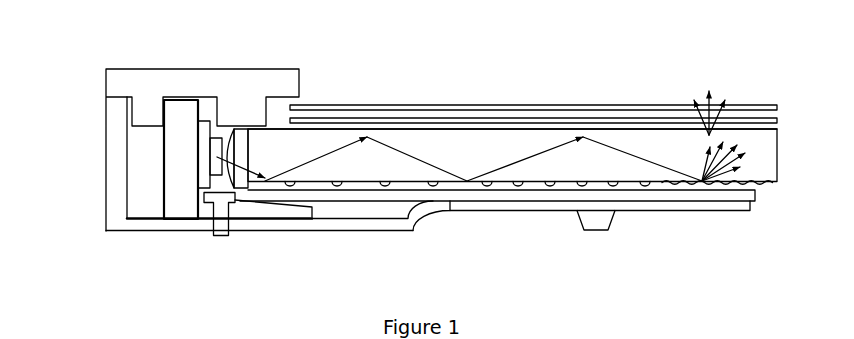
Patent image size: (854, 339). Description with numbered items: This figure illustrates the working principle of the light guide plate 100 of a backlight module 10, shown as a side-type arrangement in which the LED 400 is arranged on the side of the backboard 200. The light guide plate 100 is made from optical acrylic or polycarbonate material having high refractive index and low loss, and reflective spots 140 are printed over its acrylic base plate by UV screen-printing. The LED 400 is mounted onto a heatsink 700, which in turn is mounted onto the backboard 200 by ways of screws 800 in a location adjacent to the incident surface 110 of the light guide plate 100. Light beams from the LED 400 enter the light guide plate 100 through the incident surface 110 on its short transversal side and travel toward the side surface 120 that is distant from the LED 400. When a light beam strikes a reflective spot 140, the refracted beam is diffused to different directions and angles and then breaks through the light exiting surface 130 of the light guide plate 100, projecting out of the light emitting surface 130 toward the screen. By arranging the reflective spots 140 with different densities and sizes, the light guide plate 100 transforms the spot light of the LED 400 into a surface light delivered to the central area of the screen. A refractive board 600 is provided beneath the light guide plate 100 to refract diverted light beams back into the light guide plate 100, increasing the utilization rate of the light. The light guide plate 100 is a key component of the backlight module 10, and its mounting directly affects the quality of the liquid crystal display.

The backlight module 10 is at (96, 56).
The light guide plate 100 is at (778, 128).
The incident surface 110 is at (252, 154).
The side surface 120 is at (778, 163).
The light exiting surface 130 is at (543, 130).
The reflective spots 140 is at (763, 183).
The backboard 200 is at (513, 212).
The LED 400 is at (217, 157).
The refractive board 600 is at (757, 196).
The heatsink 700 is at (188, 208).
The screws 800 is at (226, 237).